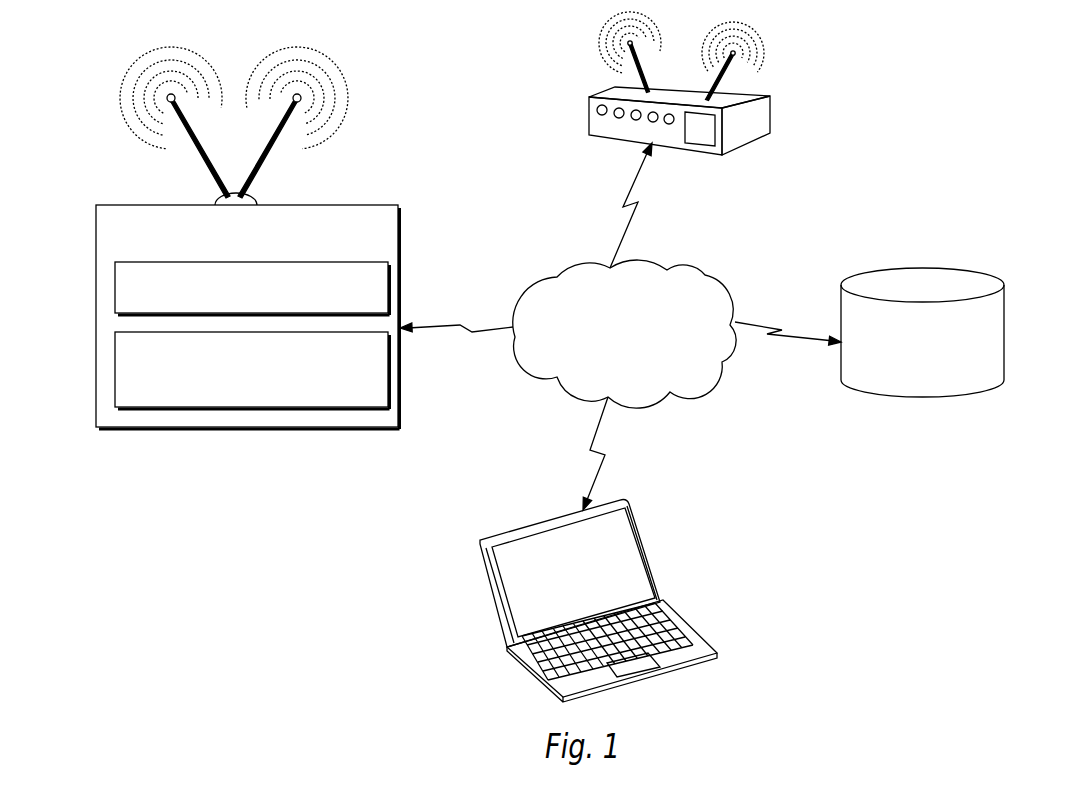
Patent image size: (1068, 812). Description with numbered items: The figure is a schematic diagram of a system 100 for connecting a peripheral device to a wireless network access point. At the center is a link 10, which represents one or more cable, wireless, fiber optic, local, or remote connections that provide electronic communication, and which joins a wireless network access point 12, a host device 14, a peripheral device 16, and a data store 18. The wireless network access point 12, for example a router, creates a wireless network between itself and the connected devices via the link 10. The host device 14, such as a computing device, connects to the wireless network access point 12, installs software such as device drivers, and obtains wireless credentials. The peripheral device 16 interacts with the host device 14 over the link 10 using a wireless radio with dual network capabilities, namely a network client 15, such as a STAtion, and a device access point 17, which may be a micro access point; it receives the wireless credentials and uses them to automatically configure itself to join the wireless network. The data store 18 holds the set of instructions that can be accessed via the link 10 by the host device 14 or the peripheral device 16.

The system 100 is at (916, 73).
The peripheral device 16 is at (96, 206).
The network client 15 is at (115, 295).
The device access point 17 is at (115, 378).
The wireless network access point 12 is at (598, 92).
The link 10 is at (705, 275).
The data store 18 is at (1004, 330).
The host device 14 is at (647, 528).